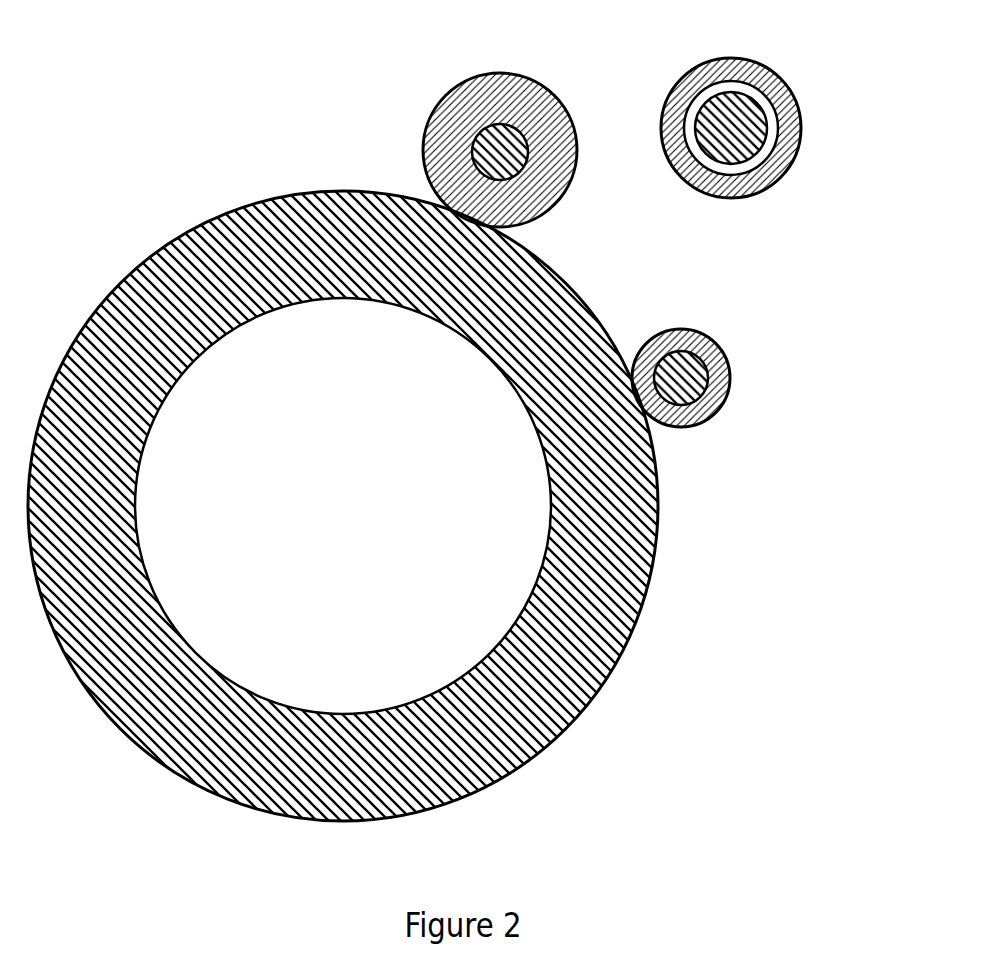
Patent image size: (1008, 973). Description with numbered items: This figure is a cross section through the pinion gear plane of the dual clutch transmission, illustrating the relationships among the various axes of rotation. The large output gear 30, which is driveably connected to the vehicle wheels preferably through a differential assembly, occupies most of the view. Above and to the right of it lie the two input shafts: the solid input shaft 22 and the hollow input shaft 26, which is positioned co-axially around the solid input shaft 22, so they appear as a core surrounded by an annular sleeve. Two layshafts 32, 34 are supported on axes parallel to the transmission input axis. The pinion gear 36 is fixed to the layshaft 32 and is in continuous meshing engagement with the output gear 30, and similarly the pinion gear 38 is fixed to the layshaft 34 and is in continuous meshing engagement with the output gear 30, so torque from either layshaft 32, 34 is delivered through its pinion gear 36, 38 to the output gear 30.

The solid input shaft 22 is at (768, 118).
The hollow input shaft 26 is at (765, 188).
The output gear 30 is at (593, 317).
The layshaft 32 is at (708, 370).
The layshaft 34 is at (480, 130).
The pinion gear 36 is at (707, 420).
The pinion gear 38 is at (567, 103).